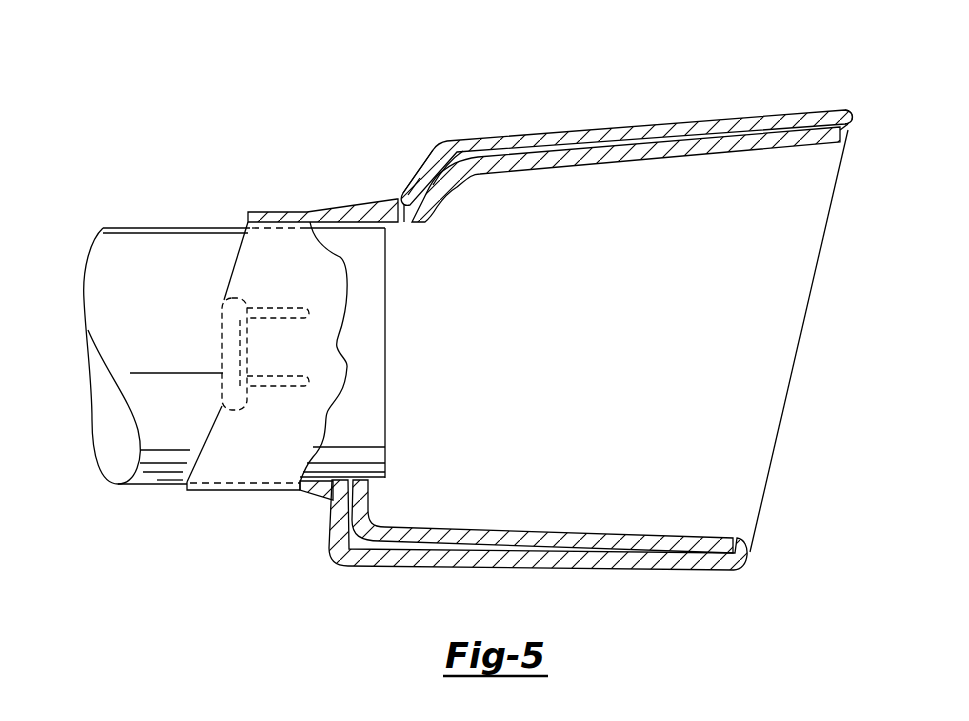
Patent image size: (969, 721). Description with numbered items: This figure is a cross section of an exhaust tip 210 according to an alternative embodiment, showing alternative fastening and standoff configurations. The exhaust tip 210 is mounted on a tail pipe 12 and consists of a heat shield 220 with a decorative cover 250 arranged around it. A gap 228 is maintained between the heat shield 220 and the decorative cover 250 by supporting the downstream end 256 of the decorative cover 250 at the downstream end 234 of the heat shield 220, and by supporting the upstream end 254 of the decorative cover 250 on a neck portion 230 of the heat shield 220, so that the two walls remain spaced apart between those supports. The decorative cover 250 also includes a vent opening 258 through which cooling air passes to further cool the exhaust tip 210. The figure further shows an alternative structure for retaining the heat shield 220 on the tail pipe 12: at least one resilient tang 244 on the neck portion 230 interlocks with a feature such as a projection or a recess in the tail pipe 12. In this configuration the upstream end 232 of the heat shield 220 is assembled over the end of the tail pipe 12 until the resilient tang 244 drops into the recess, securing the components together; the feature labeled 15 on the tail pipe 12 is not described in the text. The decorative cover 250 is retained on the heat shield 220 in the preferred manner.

The tail pipe 12 is at (179, 253).
The mounting boss 15 is at (225, 308).
The exhaust tip 210 is at (324, 99).
The heat shield 220 is at (547, 160).
The gap 228 is at (455, 162).
The neck portion 230 is at (317, 218).
The upstream end 232 is at (187, 490).
The downstream end 234 is at (848, 123).
The resilient tang 244 is at (230, 340).
The decorative cover 250 is at (663, 130).
The upstream end 254 is at (440, 148).
The downstream end 256 is at (792, 117).
The vent opening 258 is at (417, 170).